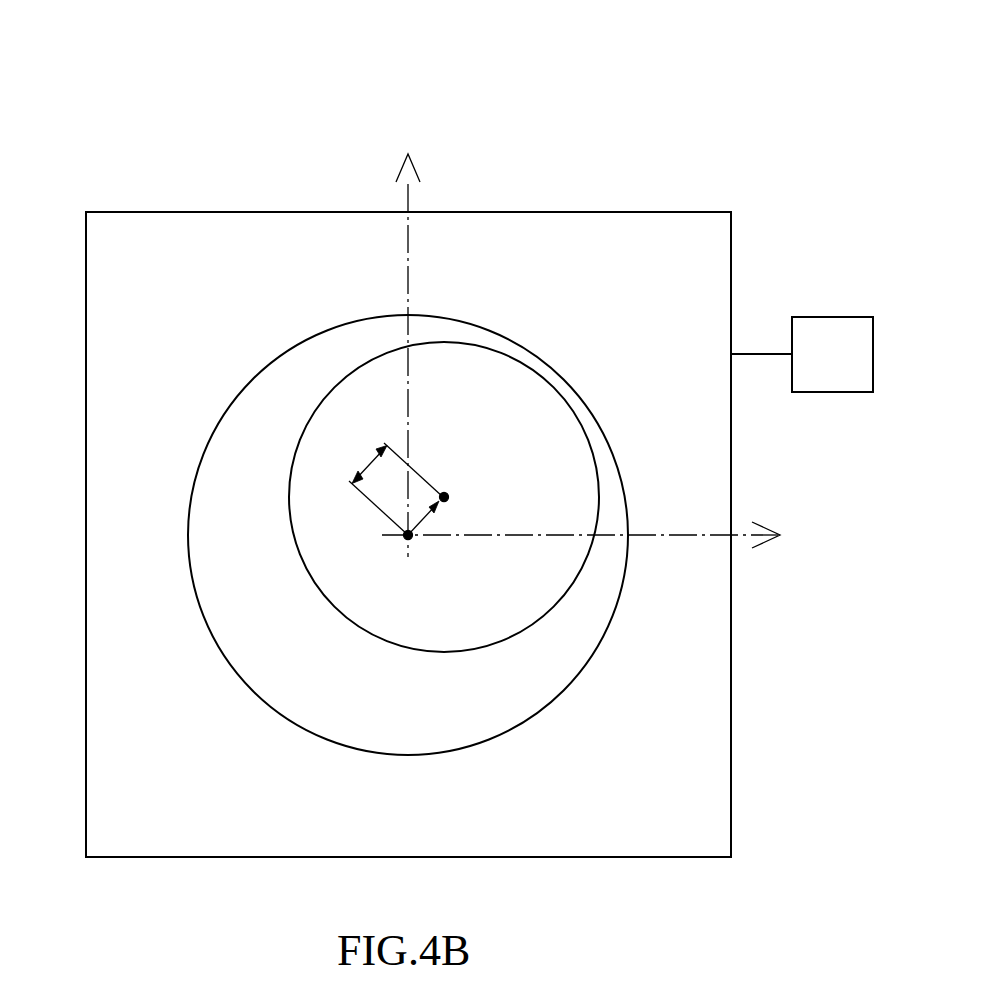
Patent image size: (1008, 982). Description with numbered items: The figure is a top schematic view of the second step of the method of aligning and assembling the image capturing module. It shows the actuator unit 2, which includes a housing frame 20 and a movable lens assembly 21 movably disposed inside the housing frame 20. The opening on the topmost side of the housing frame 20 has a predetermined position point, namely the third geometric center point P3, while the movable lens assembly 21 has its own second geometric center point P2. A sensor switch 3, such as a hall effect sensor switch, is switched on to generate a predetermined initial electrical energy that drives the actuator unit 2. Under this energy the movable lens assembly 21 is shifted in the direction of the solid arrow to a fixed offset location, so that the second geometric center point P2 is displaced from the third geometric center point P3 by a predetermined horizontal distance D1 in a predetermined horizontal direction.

The actuator unit 2 is at (109, 42).
The housing frame 20 is at (116, 538).
The movable lens assembly 21 is at (314, 512).
The sensor switch 3 is at (832, 318).
The second geometric center point P2 is at (448, 500).
The third geometric center point P3 is at (413, 539).
The predetermined horizontal distance D1 is at (392, 484).